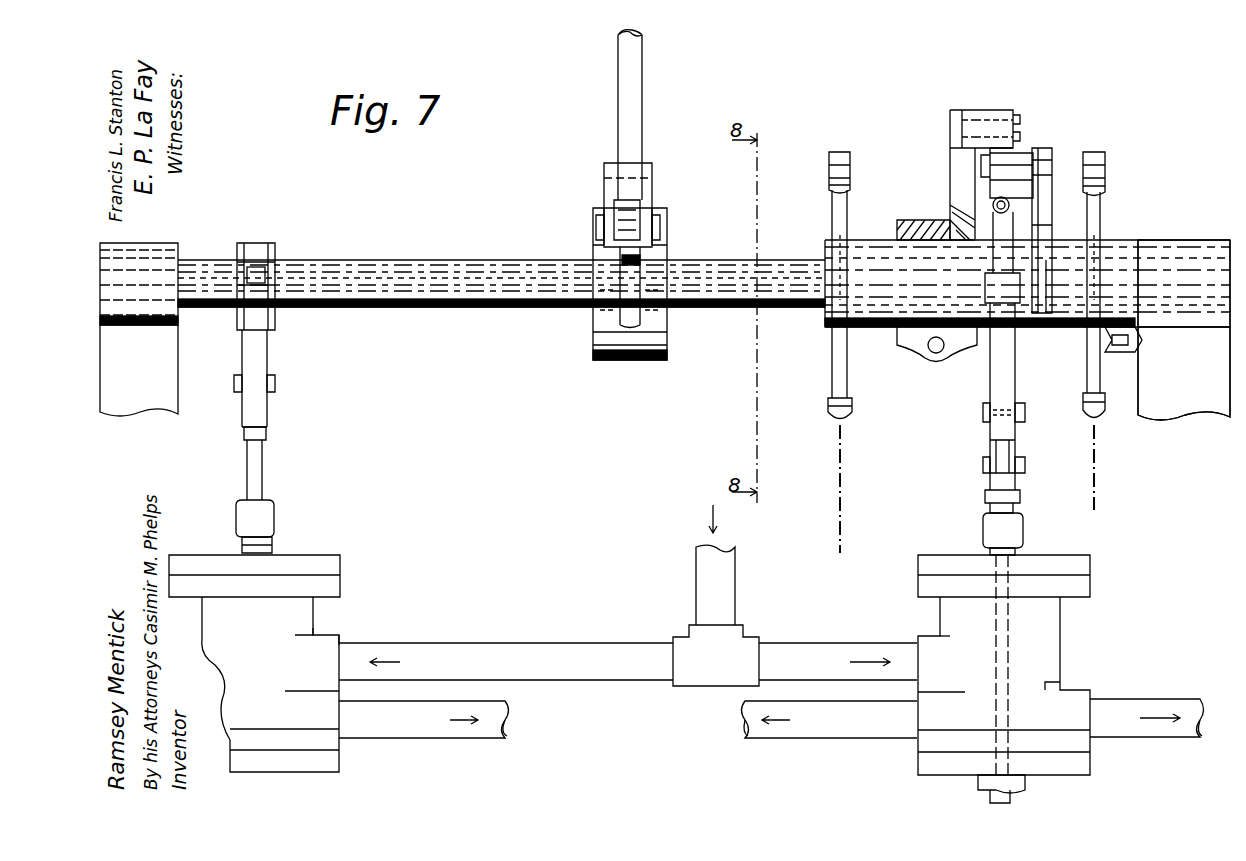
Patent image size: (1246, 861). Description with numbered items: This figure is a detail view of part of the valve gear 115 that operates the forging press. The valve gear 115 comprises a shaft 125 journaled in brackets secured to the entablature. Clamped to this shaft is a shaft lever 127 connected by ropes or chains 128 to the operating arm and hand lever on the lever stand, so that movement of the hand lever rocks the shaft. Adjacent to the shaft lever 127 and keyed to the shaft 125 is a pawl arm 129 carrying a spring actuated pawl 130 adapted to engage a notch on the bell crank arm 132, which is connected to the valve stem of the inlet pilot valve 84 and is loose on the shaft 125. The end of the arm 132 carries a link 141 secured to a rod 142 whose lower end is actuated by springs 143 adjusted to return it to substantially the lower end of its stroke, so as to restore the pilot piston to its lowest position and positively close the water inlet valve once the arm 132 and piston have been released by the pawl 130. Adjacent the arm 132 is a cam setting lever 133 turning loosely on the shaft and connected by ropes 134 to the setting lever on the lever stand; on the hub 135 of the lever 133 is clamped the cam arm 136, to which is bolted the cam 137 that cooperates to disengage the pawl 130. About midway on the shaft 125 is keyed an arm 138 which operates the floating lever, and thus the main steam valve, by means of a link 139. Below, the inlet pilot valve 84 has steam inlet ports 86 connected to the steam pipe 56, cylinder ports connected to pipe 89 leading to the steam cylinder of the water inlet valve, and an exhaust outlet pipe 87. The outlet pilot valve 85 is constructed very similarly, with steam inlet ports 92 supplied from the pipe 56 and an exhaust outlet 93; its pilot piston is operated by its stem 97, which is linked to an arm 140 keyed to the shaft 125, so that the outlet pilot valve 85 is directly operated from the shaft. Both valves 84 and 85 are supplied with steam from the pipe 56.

The steam pipe 56 is at (628, 595).
The inlet pilot valve 84 is at (946, 636).
The outlet pilot valve 85 is at (254, 663).
The steam inlet ports 86 is at (917, 640).
The exhaust outlet pipe 87 is at (830, 719).
The pipe 89 is at (1147, 718).
The steam inlet ports 92 is at (341, 643).
The exhaust outlet 93 is at (424, 719).
The stem 97 is at (262, 478).
The valve gear 115 is at (630, 315).
The shaft 125 is at (436, 278).
The shaft lever 127 is at (1106, 219).
The ropes or chains 128 is at (1096, 490).
The pawl arm 129 is at (1042, 315).
The spring actuated pawl 130 is at (1012, 160).
The bell crank arm 132 is at (977, 333).
The cam setting lever 133 is at (831, 357).
The ropes 134 is at (840, 472).
The hub 135 is at (1027, 283).
The cam arm 136 is at (958, 178).
The cam 137 is at (998, 118).
The arm 138 is at (610, 288).
The link 139 is at (630, 106).
The arm 140 is at (281, 266).
The link 141 is at (988, 388).
The rod 142 is at (1000, 530).
The springs 143 is at (982, 796).